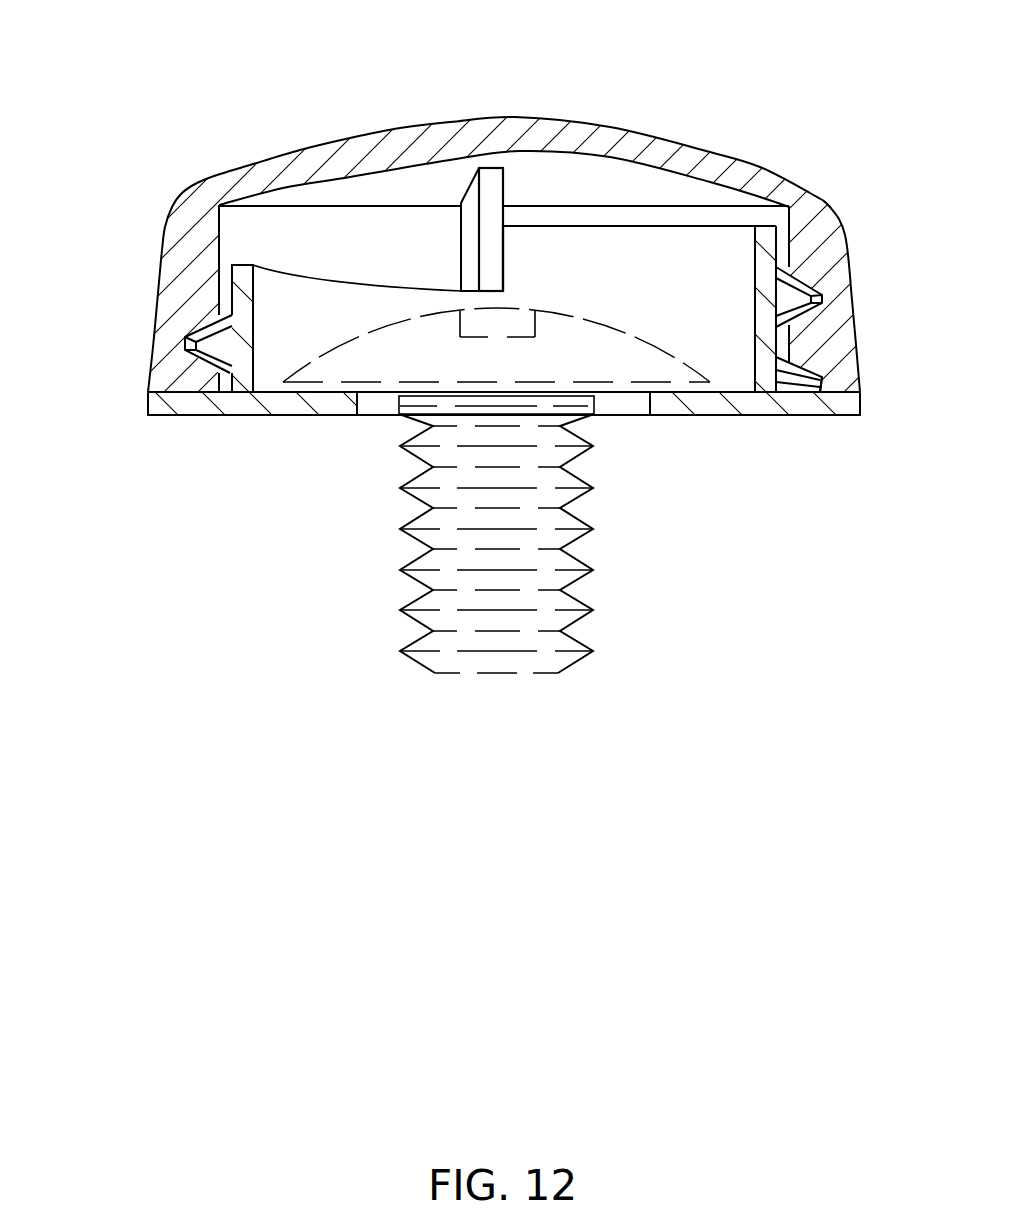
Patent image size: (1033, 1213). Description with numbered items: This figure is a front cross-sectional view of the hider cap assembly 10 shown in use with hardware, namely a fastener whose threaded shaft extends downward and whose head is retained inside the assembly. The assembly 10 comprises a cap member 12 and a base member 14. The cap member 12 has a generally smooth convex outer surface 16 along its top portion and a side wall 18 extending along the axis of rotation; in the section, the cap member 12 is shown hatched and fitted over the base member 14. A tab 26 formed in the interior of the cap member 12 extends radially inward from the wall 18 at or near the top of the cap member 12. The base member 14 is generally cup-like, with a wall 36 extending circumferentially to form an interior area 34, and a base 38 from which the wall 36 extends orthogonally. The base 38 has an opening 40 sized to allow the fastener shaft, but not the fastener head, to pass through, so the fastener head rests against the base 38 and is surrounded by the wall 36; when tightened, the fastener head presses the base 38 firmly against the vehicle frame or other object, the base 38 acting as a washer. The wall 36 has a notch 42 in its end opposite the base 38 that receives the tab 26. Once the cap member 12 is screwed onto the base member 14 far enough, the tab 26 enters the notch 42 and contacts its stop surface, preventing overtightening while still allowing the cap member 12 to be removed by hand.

The hider cap assembly 10 is at (126, 52).
The cap member 12 is at (516, 270).
The base member 14 is at (705, 425).
The convex outer surface 16 is at (697, 143).
The side wall 18 is at (857, 323).
The tab 26 is at (490, 178).
The interior area 34 is at (579, 188).
The wall 36 is at (752, 254).
The base 38 is at (220, 415).
The opening 40 is at (383, 419).
The notch 42 is at (510, 262).